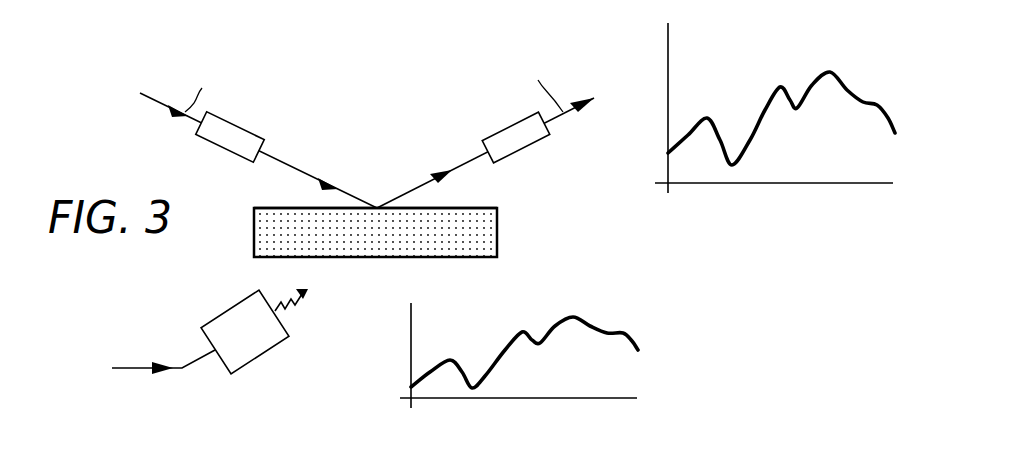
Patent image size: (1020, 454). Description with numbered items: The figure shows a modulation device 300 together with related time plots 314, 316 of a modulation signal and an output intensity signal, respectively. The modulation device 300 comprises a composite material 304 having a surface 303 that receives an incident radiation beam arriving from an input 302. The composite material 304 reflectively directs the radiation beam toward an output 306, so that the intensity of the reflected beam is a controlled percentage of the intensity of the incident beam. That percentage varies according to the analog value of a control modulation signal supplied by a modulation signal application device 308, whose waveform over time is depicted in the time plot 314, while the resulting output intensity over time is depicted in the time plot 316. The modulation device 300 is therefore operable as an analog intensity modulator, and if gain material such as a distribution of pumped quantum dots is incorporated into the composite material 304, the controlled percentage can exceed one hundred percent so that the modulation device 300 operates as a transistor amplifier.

The modulation device 300 is at (363, 97).
The input 302 is at (242, 127).
The surface 303 is at (473, 207).
The composite material 304 is at (498, 233).
The output 306 is at (493, 137).
The modulation signal application device 308 is at (223, 308).
The time plot of modulation signal 314 is at (572, 313).
The time plot of output intensity signal 316 is at (832, 67).